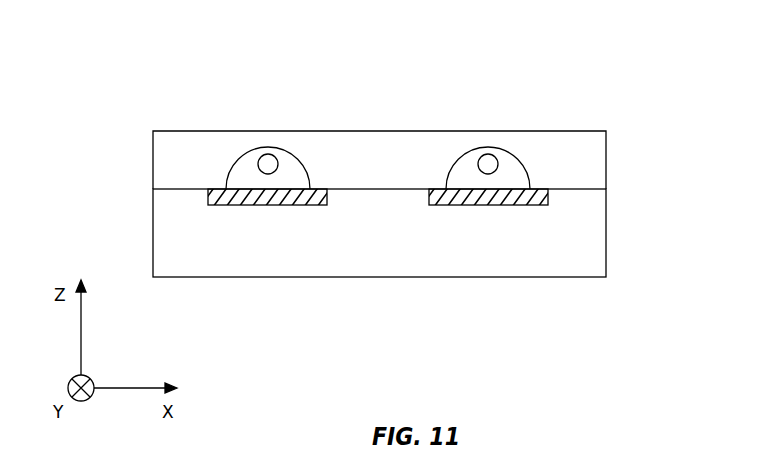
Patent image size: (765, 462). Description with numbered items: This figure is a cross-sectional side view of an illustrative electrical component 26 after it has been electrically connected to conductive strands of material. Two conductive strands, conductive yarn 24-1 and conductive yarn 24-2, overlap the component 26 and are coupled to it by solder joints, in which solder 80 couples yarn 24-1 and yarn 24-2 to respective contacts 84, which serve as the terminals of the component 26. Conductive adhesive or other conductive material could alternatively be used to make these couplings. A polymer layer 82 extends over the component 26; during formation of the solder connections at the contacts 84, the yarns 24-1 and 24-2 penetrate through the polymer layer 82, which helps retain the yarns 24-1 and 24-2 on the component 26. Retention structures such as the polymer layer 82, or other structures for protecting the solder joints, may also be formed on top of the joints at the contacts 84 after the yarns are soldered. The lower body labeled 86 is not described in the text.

The electrical component 26 is at (131, 202).
The polymer layer 82 is at (587, 130).
The substrate 86 is at (489, 278).
The solder 80 is at (240, 163).
The conductive yarn 24-1 is at (265, 151).
The conductive yarn 24-2 is at (485, 151).
The contacts 84 is at (268, 206).